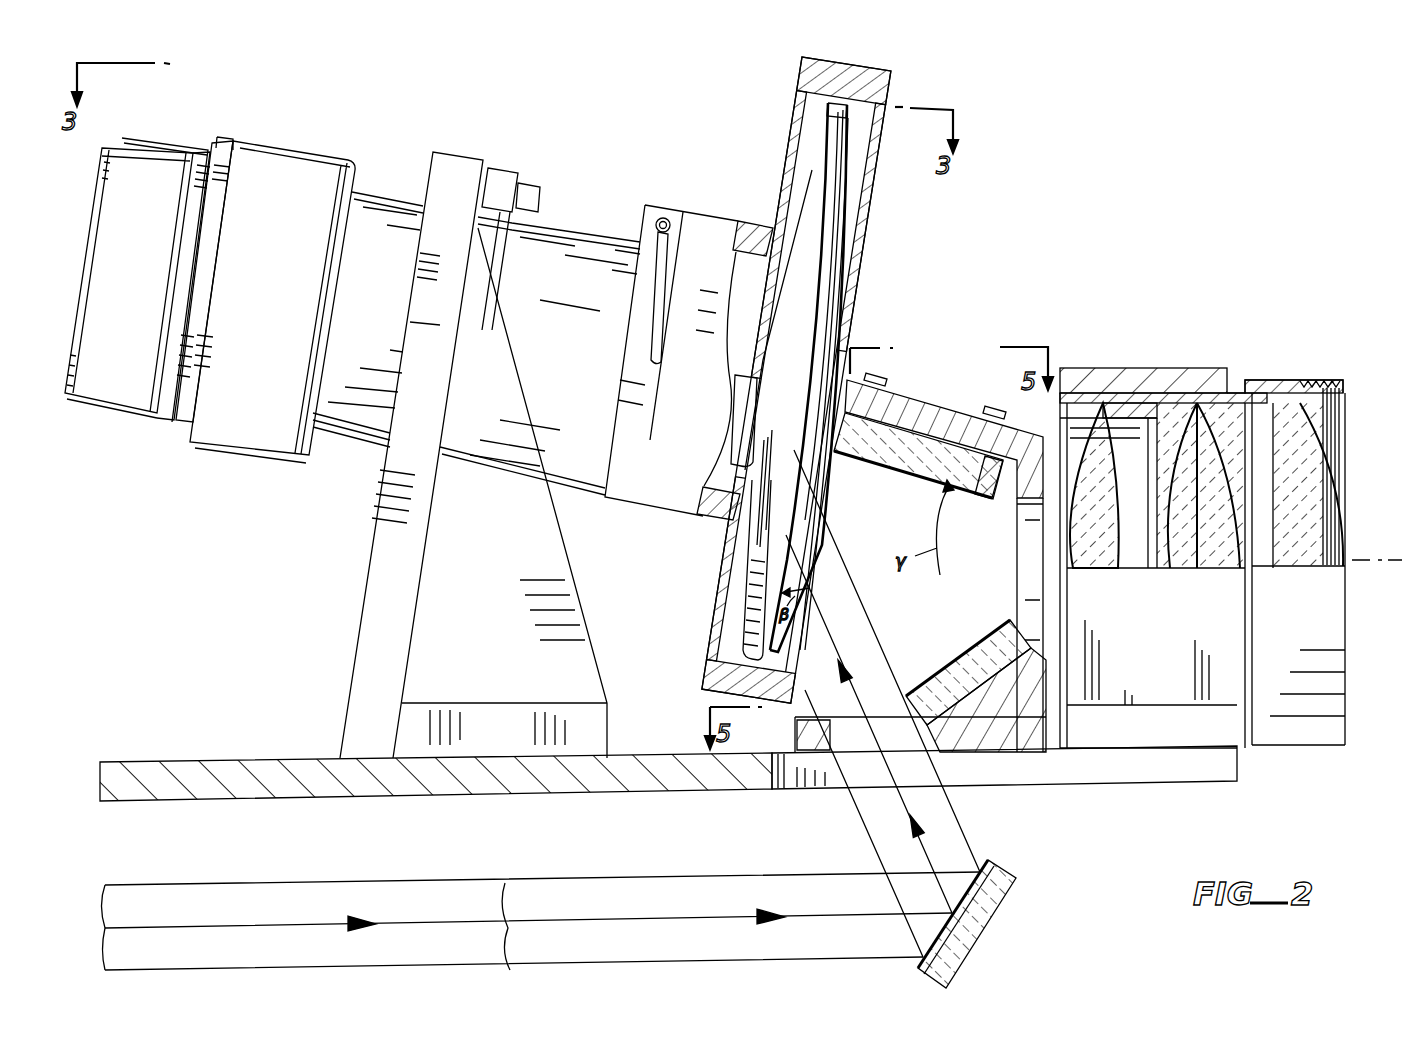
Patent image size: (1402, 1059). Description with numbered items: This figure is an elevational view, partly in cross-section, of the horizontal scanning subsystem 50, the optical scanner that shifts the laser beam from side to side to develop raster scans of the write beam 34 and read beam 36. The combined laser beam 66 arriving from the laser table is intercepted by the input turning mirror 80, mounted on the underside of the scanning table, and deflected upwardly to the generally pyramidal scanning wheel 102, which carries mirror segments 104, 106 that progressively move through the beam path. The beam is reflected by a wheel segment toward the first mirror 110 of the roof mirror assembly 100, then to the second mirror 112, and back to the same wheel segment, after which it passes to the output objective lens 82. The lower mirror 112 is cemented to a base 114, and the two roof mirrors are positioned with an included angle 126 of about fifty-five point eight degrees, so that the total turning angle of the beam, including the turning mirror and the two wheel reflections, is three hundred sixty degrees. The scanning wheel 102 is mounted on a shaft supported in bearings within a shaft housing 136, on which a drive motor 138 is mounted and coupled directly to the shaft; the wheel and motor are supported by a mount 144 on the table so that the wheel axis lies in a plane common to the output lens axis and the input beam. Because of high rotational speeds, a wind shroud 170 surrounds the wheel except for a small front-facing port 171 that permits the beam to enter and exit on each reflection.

The drive motor 138 is at (300, 150).
The shaft housing 136 is at (600, 232).
The mount 144 is at (357, 625).
The scanning wheel 102 is at (708, 568).
The wind shroud 170 is at (870, 192).
The mirror segment 106 is at (832, 272).
The mirror segment 104 is at (806, 472).
The front-facing port 171 is at (806, 498).
The roof mirror assembly 100 is at (948, 362).
The first mirror 110 is at (955, 495).
The included angle 126 is at (977, 633).
The second mirror 112 is at (963, 647).
The base 114 is at (766, 760).
The output objective lens 82 is at (1244, 372).
The horizontal scanning subsystem 50 is at (1205, 465).
The write beam 34 is at (512, 882).
The read beam 36 is at (541, 906).
The combined laser beam 66 is at (610, 920).
The input turning mirror 80 is at (920, 936).